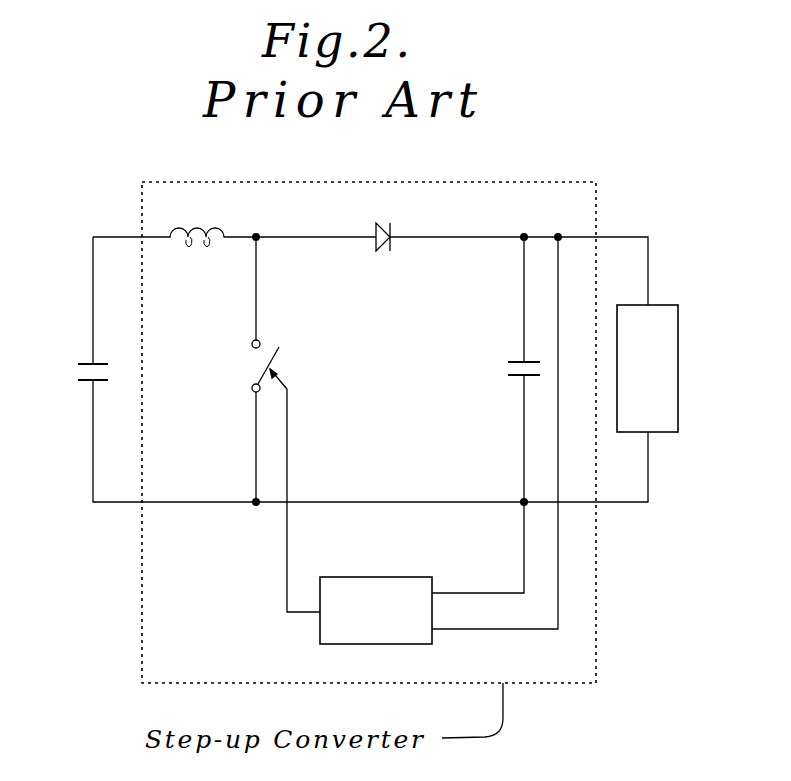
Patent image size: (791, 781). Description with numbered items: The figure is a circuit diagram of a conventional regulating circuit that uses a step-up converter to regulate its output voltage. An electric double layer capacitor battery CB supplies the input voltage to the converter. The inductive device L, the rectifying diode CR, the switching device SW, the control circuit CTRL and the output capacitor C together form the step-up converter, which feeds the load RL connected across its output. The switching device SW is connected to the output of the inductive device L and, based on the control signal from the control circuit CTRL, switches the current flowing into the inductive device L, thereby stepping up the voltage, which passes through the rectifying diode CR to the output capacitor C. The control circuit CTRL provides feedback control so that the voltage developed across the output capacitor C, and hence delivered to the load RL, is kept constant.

The inductive device L is at (207, 261).
The rectifying diode CR is at (381, 259).
The switching device SW is at (246, 366).
The electric double layer capacitor battery CB is at (65, 375).
The output capacitor C is at (504, 372).
The load RL is at (673, 368).
The control circuit CTRL is at (376, 610).